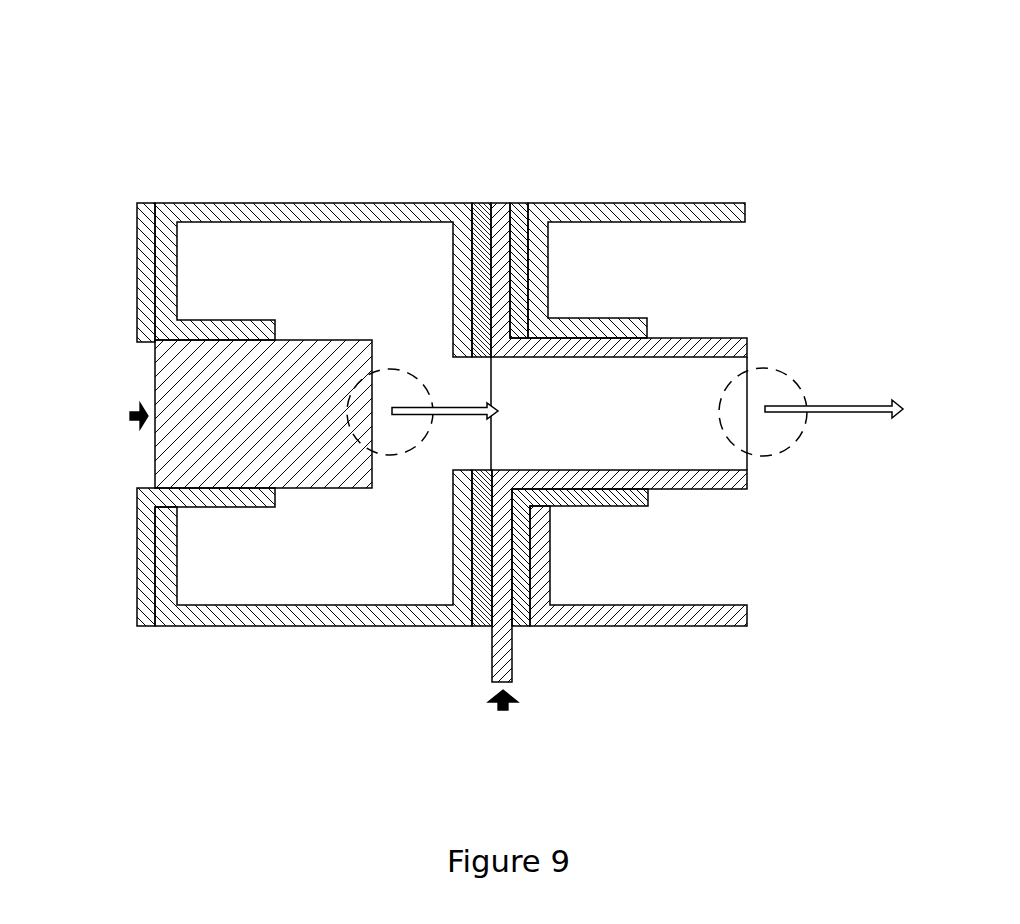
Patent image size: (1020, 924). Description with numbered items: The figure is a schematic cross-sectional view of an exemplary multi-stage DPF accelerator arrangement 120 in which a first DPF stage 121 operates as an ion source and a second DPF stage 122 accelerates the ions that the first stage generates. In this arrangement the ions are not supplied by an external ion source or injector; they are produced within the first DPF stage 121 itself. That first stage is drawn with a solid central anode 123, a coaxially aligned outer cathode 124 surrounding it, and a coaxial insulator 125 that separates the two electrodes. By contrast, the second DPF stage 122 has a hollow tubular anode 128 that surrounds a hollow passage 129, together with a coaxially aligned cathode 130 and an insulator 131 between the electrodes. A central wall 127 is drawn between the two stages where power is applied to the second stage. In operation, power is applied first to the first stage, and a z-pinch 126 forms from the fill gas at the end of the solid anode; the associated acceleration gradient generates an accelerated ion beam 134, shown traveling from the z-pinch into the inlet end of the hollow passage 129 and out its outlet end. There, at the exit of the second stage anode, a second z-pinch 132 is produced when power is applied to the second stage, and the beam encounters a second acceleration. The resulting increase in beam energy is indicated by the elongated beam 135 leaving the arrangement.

The multi-stage DPF accelerator arrangement 120 is at (443, 98).
The first DPF stage 121 is at (477, 177).
The second DPF stage 122 is at (747, 177).
The solid central anode 123 is at (320, 490).
The outer cathode 124 is at (310, 627).
The coaxial insulator 125 is at (137, 552).
The z-pinch 126 is at (381, 370).
The center wall 127 is at (480, 627).
The hollow tubular anode 128 is at (697, 489).
The hollow passage 129 is at (649, 422).
The cathode 130 is at (620, 627).
The insulator 131 is at (613, 506).
The z-pinch 132 is at (767, 367).
The accelerated ion beam 134 is at (468, 407).
The elongated beam 135 is at (876, 403).